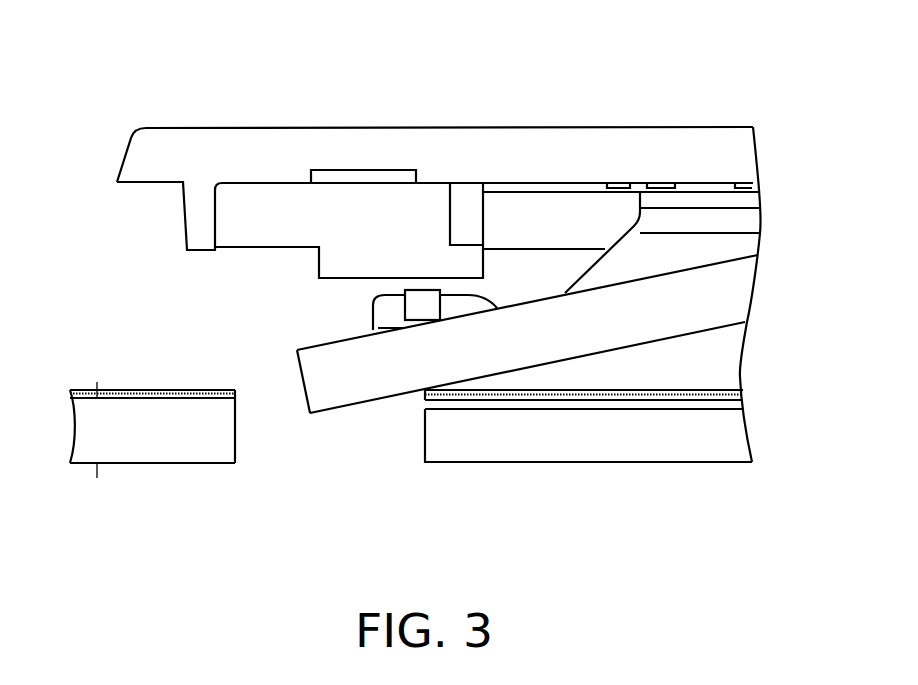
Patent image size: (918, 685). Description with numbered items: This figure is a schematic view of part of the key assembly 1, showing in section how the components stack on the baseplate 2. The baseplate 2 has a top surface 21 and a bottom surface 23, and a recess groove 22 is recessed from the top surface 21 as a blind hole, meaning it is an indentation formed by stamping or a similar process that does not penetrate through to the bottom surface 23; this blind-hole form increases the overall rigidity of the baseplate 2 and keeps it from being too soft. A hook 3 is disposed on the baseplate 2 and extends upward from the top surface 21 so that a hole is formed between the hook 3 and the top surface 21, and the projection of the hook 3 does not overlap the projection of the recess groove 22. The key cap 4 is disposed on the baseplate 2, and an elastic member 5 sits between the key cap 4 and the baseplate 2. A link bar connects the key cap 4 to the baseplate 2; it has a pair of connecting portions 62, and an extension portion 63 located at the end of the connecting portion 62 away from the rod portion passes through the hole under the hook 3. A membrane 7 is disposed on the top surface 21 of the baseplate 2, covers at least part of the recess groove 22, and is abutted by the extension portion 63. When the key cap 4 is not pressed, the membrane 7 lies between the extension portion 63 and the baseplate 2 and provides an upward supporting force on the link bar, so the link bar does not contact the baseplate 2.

The key assembly 1 is at (788, 74).
The baseplate 2 is at (647, 450).
The hook 3 is at (388, 316).
The key cap 4 is at (128, 140).
The elastic member 5 is at (736, 197).
The membrane 7 is at (487, 393).
The top surface 21 is at (93, 391).
The recess groove 22 is at (633, 407).
The bottom surface 23 is at (95, 466).
The connecting portion 62 is at (737, 277).
The extension portion 63 is at (312, 378).